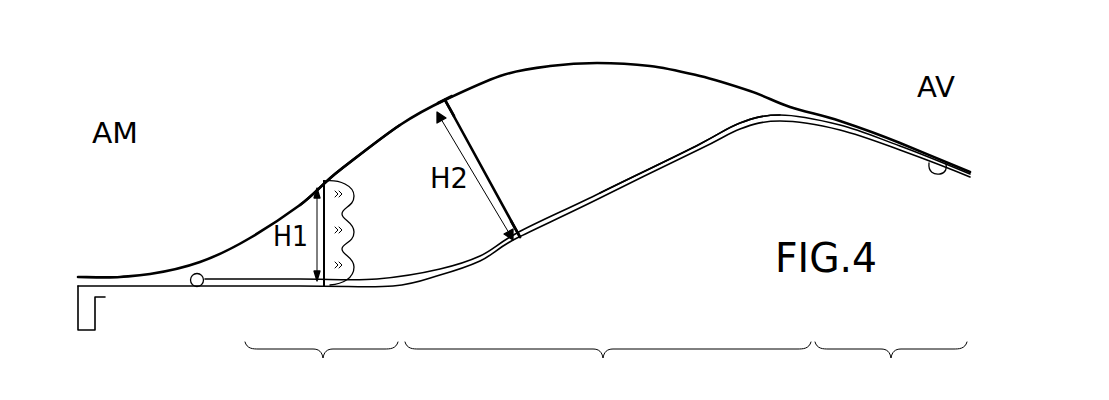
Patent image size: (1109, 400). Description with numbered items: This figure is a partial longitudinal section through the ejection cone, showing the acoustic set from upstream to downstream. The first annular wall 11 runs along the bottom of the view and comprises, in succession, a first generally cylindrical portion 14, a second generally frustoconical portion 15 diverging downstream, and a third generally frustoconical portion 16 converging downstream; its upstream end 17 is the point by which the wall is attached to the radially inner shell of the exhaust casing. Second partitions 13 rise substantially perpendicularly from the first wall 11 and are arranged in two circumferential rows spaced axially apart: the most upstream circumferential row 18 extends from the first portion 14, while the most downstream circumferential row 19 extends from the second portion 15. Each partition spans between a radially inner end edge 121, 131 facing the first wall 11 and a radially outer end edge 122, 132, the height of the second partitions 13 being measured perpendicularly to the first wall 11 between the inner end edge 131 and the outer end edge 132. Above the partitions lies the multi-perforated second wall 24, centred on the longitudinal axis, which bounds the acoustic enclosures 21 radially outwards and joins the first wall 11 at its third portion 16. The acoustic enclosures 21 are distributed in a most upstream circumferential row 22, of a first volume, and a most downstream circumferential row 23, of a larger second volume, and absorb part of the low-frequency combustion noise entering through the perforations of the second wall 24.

The first annular wall 11 is at (356, 290).
The second partitions 13 is at (338, 288).
The first generally cylindrical portion 14 is at (321, 366).
The second generally frustoconical portion 15 is at (608, 366).
The third generally frustoconical portion 16 is at (891, 366).
The upstream end 17 is at (103, 300).
The most upstream circumferential row 18 is at (345, 177).
The most downstream circumferential row 19 is at (447, 96).
The acoustic enclosures 21 is at (470, 202).
The most upstream circumferential row of acoustic enclosures 22 is at (467, 246).
The most downstream circumferential row of acoustic enclosures 23 is at (599, 174).
The second wall 24 is at (500, 74).
The radially inner end edge 121 is at (324, 287).
The radially outer end edge 122 is at (325, 181).
The radially inner end edge 131 is at (517, 240).
The radially outer end edge 132 is at (446, 98).